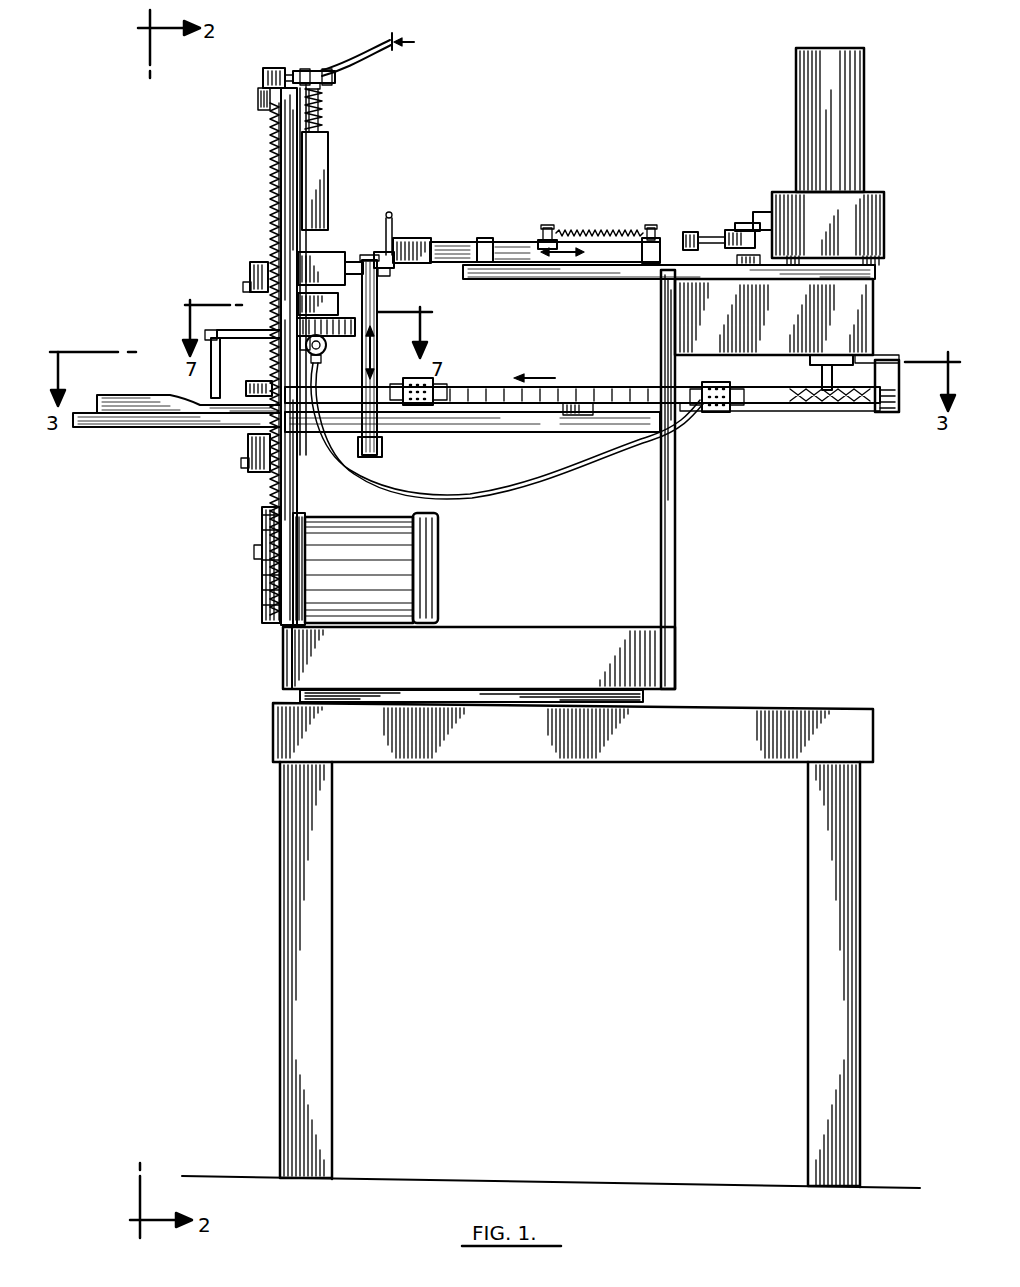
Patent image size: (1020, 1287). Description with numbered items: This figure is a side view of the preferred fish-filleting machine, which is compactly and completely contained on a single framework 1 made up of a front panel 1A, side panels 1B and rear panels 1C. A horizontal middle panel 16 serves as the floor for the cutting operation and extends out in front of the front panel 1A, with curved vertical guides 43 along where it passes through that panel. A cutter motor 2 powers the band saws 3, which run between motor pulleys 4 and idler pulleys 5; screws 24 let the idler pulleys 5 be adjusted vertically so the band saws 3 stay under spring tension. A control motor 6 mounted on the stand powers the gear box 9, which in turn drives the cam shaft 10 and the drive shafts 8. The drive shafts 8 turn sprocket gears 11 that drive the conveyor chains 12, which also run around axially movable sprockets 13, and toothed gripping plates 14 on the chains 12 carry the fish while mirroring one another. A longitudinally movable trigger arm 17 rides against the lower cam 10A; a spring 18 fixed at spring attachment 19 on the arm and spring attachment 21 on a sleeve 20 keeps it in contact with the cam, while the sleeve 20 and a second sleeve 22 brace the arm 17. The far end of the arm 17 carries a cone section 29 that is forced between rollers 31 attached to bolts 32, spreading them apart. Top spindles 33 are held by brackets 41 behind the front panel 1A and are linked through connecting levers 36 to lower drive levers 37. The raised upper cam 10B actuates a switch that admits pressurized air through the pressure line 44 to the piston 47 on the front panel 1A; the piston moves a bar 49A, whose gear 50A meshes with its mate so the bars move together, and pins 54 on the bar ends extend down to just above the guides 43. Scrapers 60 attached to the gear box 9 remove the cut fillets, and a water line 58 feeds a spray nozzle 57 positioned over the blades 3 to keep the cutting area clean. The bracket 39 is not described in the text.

The framework 1 is at (200, 506).
The front panel 1A is at (285, 638).
The side panel 1B is at (650, 665).
The rear panel 1C is at (667, 550).
The cutter motor 2 is at (348, 530).
The band saw 3 is at (275, 492).
The motor pulley 4 is at (262, 530).
The idler pulley 5 is at (268, 136).
The control motor 6 is at (855, 142).
The drive shaft 8 is at (824, 370).
The gear box 9 is at (858, 314).
The cam shaft 10 is at (716, 232).
The lower cam 10A is at (740, 223).
The upper cam 10B is at (762, 212).
The sprocket gear 11 is at (822, 406).
The conveyor chain 12 is at (776, 410).
The sprocket 13 is at (254, 382).
The toothed gripping plate 14 is at (432, 390).
The middle panel 16 is at (126, 427).
The trigger arm 17 is at (522, 250).
The spring 18 is at (600, 231).
The spring attachment 19 is at (548, 228).
The sleeve 20 is at (656, 252).
The spring attachment 21 is at (650, 228).
The sleeve 22 is at (483, 238).
The screw 24 is at (321, 100).
The cone section 29 is at (410, 238).
The roller 31 is at (378, 252).
The bolt 32 is at (389, 212).
The top spindle 33 is at (362, 268).
The connecting lever 36 is at (378, 300).
The lower drive lever 37 is at (382, 448).
The guide bracket 39 is at (250, 274).
The bracket 41 is at (315, 265).
The curved vertical guide 43 is at (165, 395).
The pressure line 44 is at (602, 466).
The piston 47 is at (326, 350).
The bar 49A is at (260, 332).
The gear 50A is at (358, 326).
The pin 54 is at (214, 350).
The spray nozzle 57 is at (276, 67).
The water line 58 is at (382, 52).
The scraper 60 is at (886, 412).